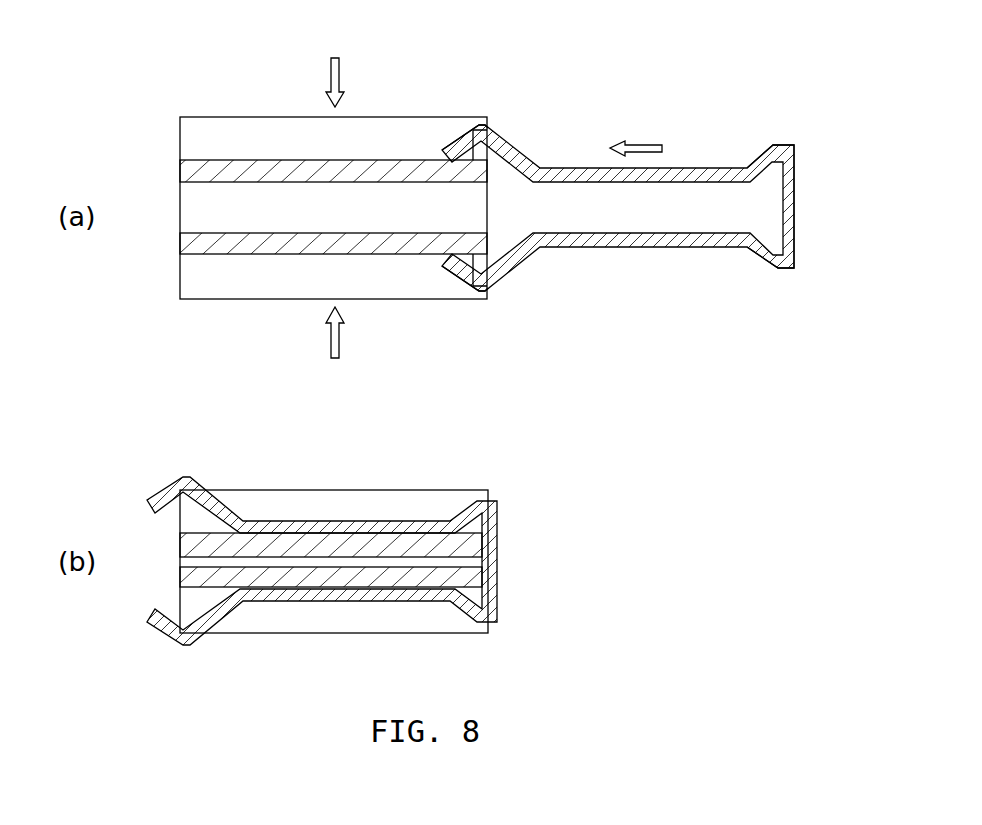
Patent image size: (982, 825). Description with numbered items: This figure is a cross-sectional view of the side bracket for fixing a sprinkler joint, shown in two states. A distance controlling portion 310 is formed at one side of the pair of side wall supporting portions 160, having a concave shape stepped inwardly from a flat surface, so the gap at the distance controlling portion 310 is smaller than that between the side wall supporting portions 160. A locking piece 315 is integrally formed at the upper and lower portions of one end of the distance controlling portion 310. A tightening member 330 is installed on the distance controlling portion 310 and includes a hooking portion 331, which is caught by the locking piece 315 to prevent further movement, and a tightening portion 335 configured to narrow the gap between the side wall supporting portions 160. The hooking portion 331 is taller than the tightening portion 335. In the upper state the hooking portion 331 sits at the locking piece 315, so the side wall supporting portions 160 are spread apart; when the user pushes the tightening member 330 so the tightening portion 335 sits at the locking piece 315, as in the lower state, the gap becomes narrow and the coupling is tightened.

The side wall supporting portion 160 is at (408, 117).
The distance controlling portion 310 is at (223, 161).
The locking piece 315 is at (485, 135).
The tightening member 330 is at (718, 165).
The hooking portion 331 is at (487, 287).
The tightening portion 335 is at (783, 262).